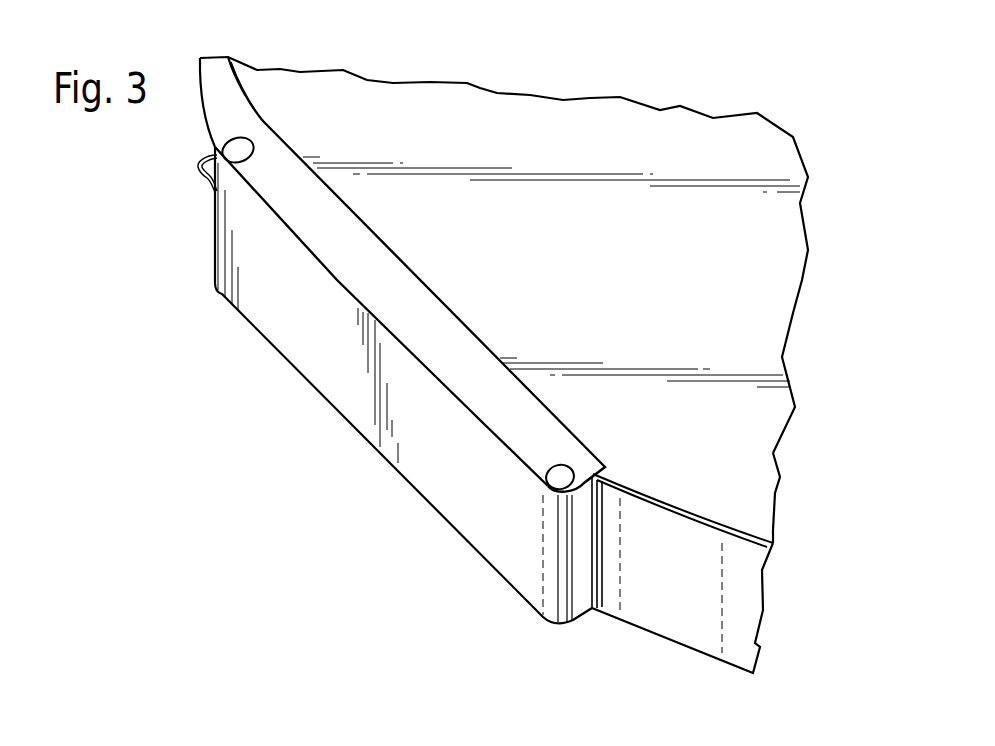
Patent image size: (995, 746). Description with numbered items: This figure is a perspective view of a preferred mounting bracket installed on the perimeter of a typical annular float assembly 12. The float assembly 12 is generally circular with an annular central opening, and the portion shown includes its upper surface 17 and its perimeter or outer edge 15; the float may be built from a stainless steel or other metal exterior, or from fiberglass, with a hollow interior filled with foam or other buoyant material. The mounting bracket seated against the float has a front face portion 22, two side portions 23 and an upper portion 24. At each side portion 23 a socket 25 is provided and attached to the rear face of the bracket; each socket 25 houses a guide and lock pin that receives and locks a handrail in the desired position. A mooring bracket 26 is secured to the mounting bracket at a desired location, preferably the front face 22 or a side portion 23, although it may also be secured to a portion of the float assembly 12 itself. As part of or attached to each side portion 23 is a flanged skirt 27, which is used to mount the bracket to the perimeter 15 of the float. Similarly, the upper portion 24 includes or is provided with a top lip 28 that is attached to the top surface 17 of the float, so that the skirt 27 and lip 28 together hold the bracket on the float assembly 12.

The float assembly 12 is at (675, 92).
The perimeter or outer edge 15 is at (745, 642).
The upper surface 17 is at (760, 487).
The front face portion 22 is at (317, 340).
The side portion 23 is at (575, 597).
The upper portion 24 is at (497, 415).
The socket 25 is at (552, 477).
The mooring bracket 26 is at (193, 170).
The flanged skirt 27 is at (597, 610).
The top lip 28 is at (610, 472).